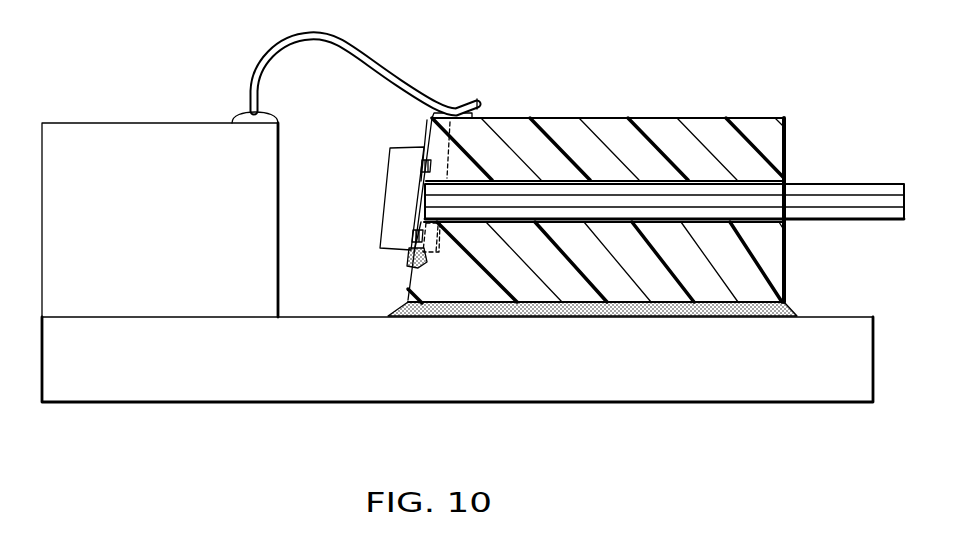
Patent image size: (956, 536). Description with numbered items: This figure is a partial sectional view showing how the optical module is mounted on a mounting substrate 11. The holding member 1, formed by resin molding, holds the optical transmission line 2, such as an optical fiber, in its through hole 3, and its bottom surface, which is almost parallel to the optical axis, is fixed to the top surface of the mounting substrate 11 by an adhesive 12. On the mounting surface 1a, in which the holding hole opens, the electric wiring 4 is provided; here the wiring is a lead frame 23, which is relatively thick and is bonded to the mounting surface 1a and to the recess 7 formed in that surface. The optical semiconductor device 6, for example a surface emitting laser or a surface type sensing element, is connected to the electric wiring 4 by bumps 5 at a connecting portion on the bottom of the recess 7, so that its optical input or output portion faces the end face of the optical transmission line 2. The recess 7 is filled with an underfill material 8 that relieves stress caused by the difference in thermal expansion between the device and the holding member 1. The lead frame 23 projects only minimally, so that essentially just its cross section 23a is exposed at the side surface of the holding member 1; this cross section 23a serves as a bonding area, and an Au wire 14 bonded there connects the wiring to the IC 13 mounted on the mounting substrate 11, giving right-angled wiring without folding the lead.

The holding member 1 is at (614, 117).
The mounting surface 1a is at (408, 295).
The optical transmission line 2 is at (848, 182).
The through hole 3 is at (772, 178).
The electric wiring 4 is at (543, 117).
The bumps 5 is at (412, 236).
The optical semiconductor device 6 is at (388, 175).
The recess 7 is at (420, 262).
The underfill material 8 is at (408, 257).
The mounting substrate 11 is at (712, 390).
The adhesive 12 is at (786, 311).
The IC 13 is at (103, 308).
The Au wire 14 is at (255, 60).
The lead frame 23 is at (430, 127).
The cross section 23a is at (450, 110).